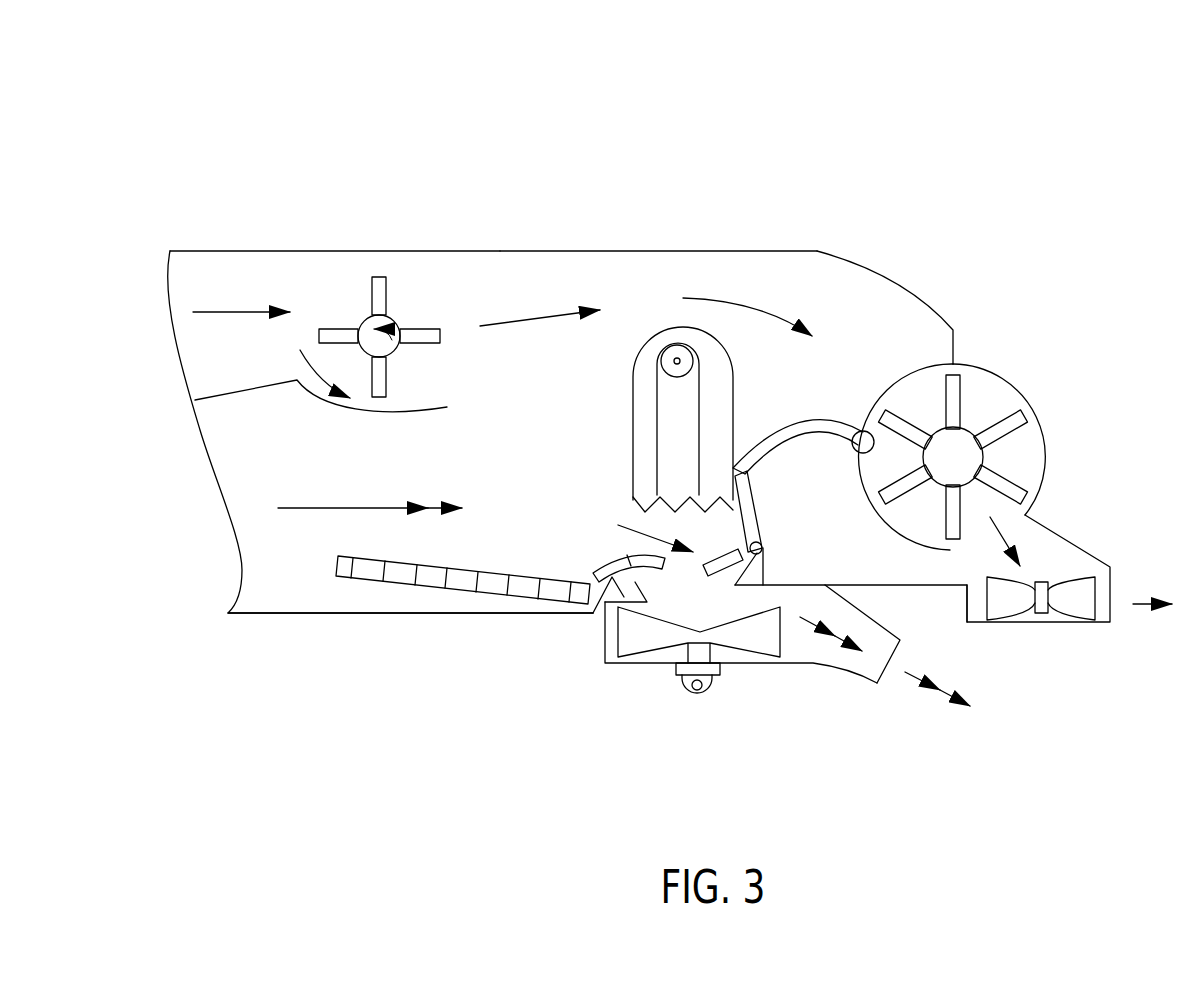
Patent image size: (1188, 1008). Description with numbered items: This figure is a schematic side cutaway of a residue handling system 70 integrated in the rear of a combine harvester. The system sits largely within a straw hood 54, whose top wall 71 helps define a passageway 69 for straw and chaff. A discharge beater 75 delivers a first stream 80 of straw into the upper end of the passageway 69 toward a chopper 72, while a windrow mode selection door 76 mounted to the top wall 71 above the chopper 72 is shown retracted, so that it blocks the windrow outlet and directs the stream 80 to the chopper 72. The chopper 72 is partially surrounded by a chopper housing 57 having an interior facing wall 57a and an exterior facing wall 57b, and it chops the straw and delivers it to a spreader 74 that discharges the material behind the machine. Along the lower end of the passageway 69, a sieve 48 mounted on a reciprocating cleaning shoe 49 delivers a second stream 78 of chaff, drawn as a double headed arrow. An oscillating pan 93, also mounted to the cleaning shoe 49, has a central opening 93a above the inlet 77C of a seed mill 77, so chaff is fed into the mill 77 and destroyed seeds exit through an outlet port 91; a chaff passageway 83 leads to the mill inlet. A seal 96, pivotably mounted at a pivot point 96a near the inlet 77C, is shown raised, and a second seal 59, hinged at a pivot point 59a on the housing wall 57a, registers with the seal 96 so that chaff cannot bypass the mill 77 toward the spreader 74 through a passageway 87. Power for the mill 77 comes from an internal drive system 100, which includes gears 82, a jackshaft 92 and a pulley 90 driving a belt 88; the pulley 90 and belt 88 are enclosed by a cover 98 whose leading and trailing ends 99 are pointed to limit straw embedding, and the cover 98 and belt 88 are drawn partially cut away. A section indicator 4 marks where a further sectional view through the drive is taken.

The section line 4- 4 is at (772, 240).
The sieve 48 is at (395, 587).
The reciprocating cleaning shoe 49 is at (478, 615).
The straw hood 54 is at (588, 250).
The chopper housing 57 is at (1080, 478).
The interior facing wall 57a is at (913, 540).
The exterior facing wall 57b is at (1045, 433).
The seal 59 is at (820, 424).
The pivot point 59a is at (866, 431).
The passageway 69 is at (523, 277).
The residue handling system 70 is at (875, 205).
The top wall 71 is at (435, 250).
The chopper 72 is at (955, 445).
The spreader 74 is at (1063, 592).
The discharge beater 75 is at (385, 330).
The windrow mode selection door 76 is at (922, 302).
The seed mill 77 is at (730, 650).
The inlet 77C is at (673, 610).
The stream of chaff 78 is at (342, 508).
The first stream of residue 80 is at (228, 312).
The gears 82 is at (697, 690).
The chaff passageway 83 is at (500, 547).
The passageway 87 is at (933, 578).
The belt 88 is at (657, 490).
The pulley 90 is at (673, 363).
The outlet port 91 is at (890, 672).
The jackshaft 92 is at (672, 358).
The oscillating pan 93 is at (620, 557).
The central opening 93a is at (686, 558).
The seal 96 is at (757, 490).
The pivot point 96a is at (763, 549).
The cover 98 is at (633, 452).
The leading and trailing ends 99 is at (633, 413).
The internal drive system 100 is at (625, 372).